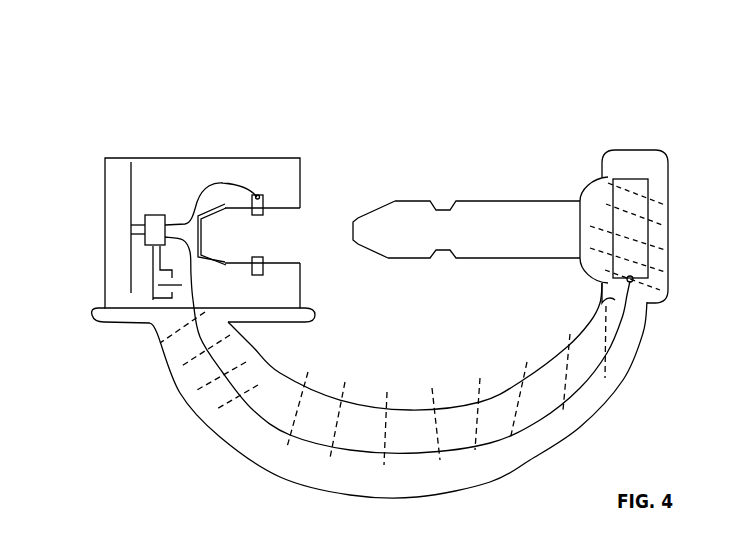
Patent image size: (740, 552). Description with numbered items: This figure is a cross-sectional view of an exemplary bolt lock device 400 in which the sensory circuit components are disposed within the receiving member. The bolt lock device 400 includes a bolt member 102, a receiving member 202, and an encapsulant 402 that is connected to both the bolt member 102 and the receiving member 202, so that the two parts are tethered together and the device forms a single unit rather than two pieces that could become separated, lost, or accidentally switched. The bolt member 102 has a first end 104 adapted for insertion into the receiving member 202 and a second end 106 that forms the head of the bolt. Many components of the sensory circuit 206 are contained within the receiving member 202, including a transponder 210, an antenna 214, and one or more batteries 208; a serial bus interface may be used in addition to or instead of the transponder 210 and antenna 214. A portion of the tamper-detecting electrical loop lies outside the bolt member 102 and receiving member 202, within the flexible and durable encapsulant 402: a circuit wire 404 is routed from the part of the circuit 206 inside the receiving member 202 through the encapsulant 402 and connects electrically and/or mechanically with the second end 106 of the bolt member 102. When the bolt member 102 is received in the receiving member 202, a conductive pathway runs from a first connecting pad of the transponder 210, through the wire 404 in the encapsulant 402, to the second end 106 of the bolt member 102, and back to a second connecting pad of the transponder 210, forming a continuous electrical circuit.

The bolt lock device 400 is at (615, 63).
The bolt member 102 is at (500, 223).
The first end 104 is at (368, 202).
The second end 106 is at (640, 143).
The receiving member 202 is at (280, 187).
The sensory circuit 206 is at (218, 183).
The batteries 208 is at (167, 297).
The transponder 210 is at (158, 213).
The antenna 214 is at (123, 253).
The encapsulant 402 is at (368, 438).
The circuit wire 404 is at (530, 400).